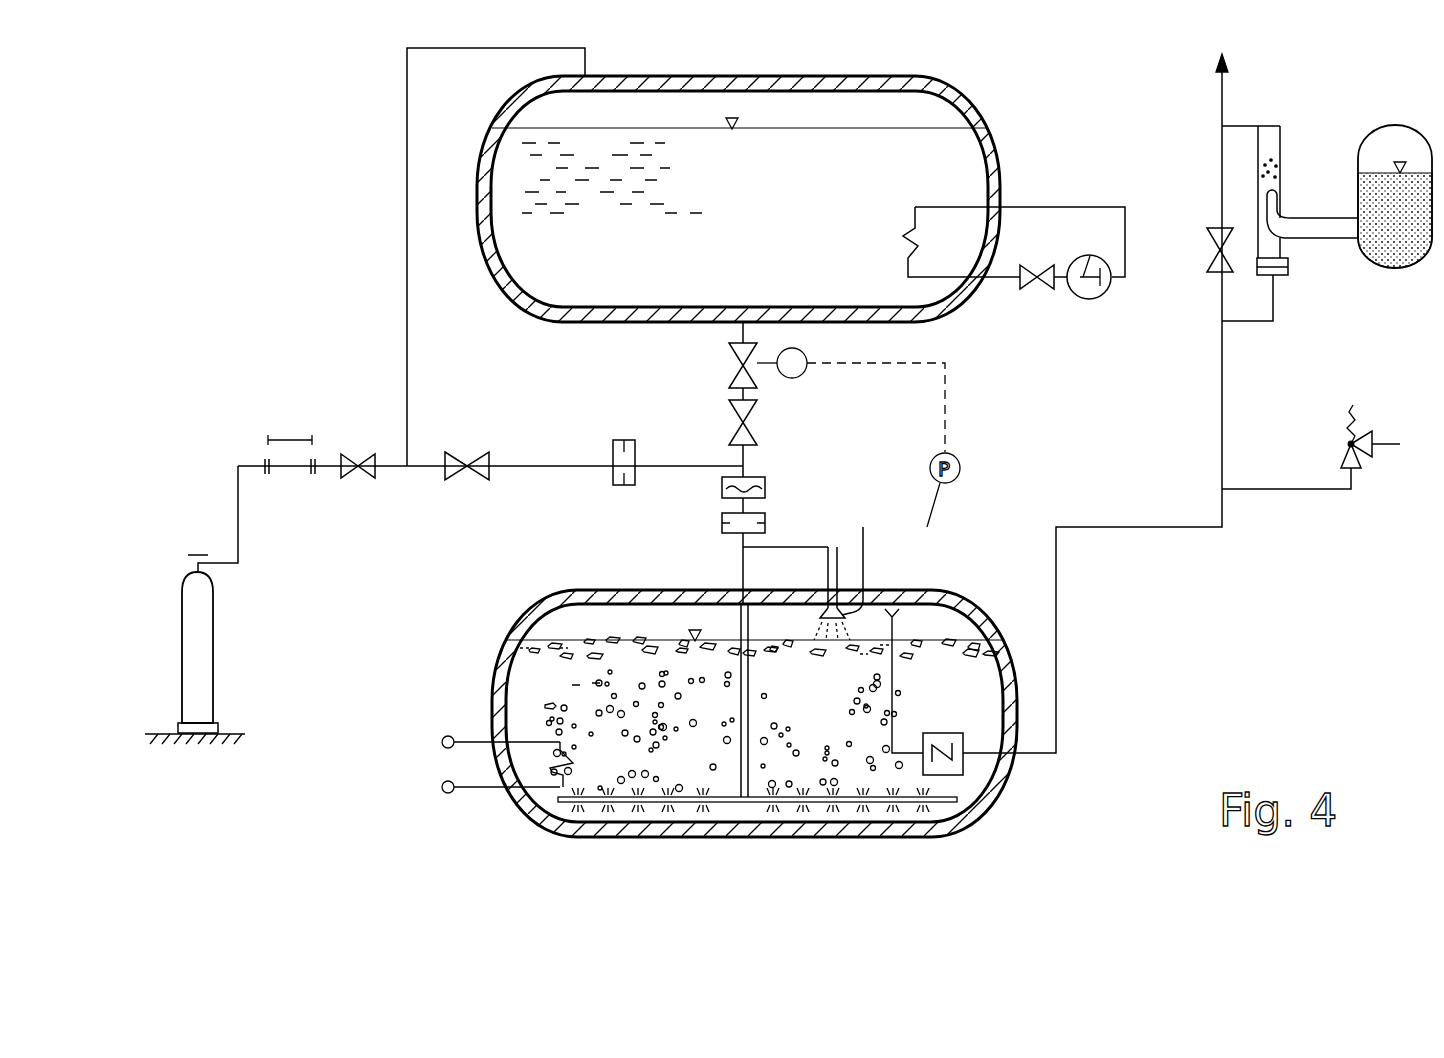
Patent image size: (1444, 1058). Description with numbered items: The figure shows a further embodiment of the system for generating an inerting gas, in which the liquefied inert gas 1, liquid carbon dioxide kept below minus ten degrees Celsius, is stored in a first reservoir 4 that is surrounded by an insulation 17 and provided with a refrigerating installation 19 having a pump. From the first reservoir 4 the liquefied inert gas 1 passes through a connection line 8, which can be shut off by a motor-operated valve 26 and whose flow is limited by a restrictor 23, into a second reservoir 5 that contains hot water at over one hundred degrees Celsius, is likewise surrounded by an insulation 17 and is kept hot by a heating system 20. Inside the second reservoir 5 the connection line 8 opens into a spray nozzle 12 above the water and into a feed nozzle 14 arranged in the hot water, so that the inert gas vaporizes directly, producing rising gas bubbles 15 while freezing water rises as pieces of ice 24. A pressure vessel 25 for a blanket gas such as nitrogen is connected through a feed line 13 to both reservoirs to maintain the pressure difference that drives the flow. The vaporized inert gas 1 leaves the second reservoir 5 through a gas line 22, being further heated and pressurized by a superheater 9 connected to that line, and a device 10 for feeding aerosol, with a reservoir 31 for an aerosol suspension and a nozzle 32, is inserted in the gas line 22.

The liquefied inert gas 1 is at (560, 620).
The first reservoir 4 is at (937, 160).
The second reservoir 5 is at (608, 747).
The connection line 8 is at (743, 568).
The superheater 9 is at (965, 765).
The device for feeding aerosol 10 is at (1400, 268).
The spray nozzle 12 is at (883, 591).
The feed line 13 is at (405, 160).
The feed nozzle 14 is at (800, 802).
The gas bubbles 15 is at (545, 705).
The insulation 17 is at (975, 108).
The refrigerating installation 19 is at (1088, 299).
The heating system 20 is at (475, 790).
The gas line 22 is at (1158, 527).
The restrictor 23 is at (722, 521).
The pieces of ice 24 is at (540, 655).
The pressure vessel 25 is at (214, 620).
The valve 26 is at (730, 358).
The reservoir for aerosol suspension 31 is at (1372, 195).
The nozzle 32 is at (1300, 215).